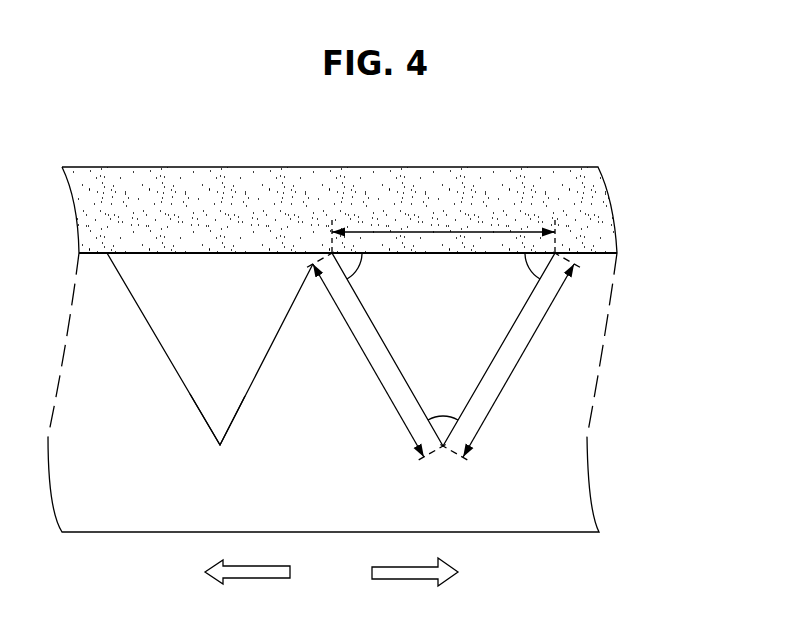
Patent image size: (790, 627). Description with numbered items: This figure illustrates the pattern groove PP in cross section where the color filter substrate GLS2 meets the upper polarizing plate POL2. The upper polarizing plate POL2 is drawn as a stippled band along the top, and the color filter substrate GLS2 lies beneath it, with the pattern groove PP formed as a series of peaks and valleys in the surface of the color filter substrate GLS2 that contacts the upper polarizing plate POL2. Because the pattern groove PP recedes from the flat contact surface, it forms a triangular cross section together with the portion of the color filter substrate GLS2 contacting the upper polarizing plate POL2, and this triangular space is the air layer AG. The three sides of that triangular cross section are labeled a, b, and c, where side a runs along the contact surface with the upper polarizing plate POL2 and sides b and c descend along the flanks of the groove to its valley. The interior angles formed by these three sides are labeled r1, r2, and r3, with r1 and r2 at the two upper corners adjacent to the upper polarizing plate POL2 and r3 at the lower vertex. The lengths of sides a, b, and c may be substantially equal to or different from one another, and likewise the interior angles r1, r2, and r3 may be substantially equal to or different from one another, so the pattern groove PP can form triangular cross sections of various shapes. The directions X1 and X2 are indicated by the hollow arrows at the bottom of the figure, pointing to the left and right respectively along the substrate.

The upper polarizing plate POL2 is at (587, 210).
The color filter substrate GLS2 is at (587, 359).
The air layer AG is at (158, 300).
The pattern groove PP is at (240, 410).
The side of triangular cross section a is at (443, 230).
The side of triangular cross section b is at (518, 360).
The side of triangular cross section c is at (368, 360).
The interior angle r1 is at (368, 271).
The interior angle r2 is at (517, 271).
The interior angle r3 is at (443, 403).
The first direction X1 is at (231, 573).
The second direction X2 is at (430, 572).